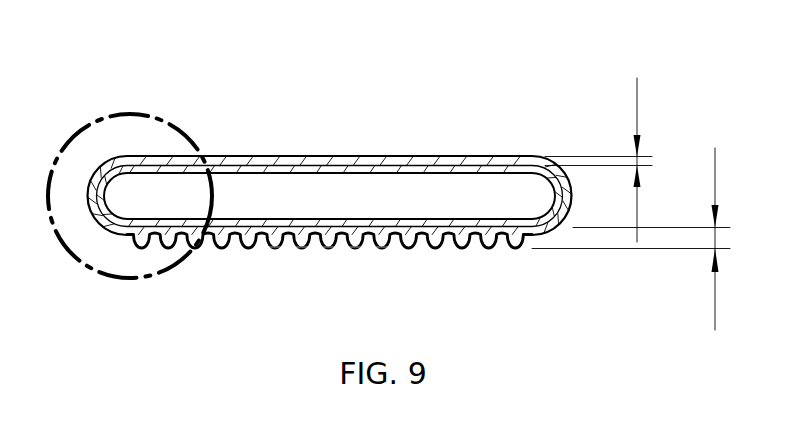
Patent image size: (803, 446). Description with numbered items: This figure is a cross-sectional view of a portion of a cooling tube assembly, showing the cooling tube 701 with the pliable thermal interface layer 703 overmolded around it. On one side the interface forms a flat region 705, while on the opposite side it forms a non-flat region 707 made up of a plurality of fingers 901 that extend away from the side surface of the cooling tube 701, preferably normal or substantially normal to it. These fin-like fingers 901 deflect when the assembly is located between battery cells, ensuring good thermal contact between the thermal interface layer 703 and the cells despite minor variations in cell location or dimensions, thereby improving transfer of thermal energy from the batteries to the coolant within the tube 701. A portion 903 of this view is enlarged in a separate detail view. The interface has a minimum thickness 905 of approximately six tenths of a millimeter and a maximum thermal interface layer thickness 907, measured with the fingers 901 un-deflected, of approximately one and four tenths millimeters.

The cooling tube 701 is at (372, 219).
The thermal interface layer 703 is at (433, 160).
The flat region 705 is at (333, 142).
The non-flat region 707 is at (403, 278).
The fingers 901 is at (382, 250).
The portion 903 is at (206, 153).
The minimum thickness 905 is at (599, 149).
The maximum thermal interface layer thickness 907 is at (631, 253).